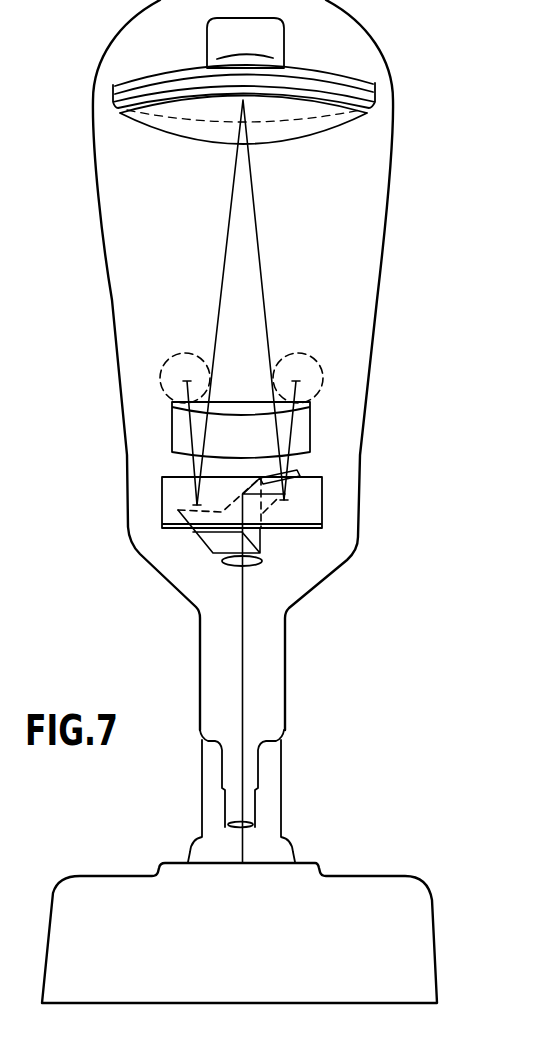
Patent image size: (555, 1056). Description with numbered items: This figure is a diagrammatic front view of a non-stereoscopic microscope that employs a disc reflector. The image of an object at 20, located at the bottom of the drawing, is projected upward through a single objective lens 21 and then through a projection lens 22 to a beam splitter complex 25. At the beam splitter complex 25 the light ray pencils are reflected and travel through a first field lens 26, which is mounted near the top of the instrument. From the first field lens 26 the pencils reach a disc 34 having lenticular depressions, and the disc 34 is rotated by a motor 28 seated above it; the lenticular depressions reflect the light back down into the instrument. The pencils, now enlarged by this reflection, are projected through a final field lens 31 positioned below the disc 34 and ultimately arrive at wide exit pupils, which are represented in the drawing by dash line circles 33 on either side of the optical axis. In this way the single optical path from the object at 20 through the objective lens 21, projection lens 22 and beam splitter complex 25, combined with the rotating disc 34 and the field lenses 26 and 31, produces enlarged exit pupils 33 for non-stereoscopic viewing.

The object 20 is at (247, 862).
The objective lens 21 is at (250, 810).
The projection lens 22 is at (262, 566).
The beam splitter complex 25 is at (263, 547).
The first field lens 26 is at (358, 118).
The motor 28 is at (210, 37).
The final field lens 31 is at (303, 437).
The exit pupils 33 is at (182, 353).
The disc 34 is at (357, 80).